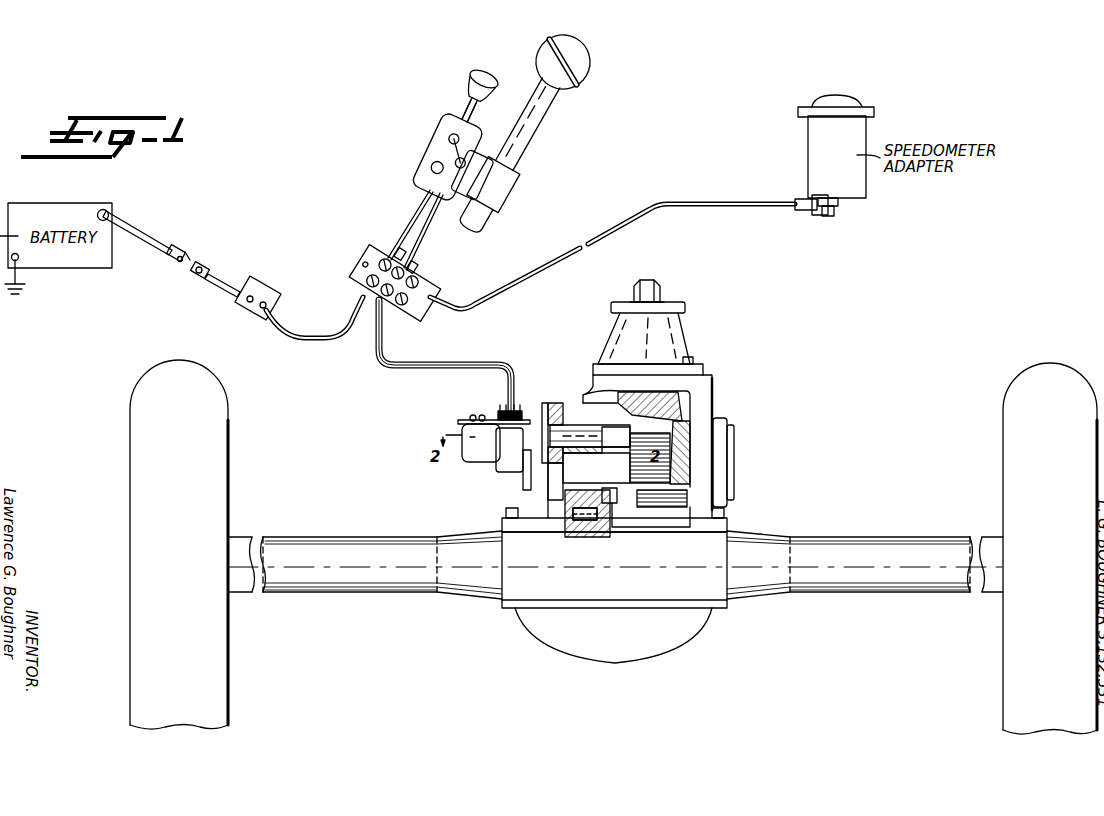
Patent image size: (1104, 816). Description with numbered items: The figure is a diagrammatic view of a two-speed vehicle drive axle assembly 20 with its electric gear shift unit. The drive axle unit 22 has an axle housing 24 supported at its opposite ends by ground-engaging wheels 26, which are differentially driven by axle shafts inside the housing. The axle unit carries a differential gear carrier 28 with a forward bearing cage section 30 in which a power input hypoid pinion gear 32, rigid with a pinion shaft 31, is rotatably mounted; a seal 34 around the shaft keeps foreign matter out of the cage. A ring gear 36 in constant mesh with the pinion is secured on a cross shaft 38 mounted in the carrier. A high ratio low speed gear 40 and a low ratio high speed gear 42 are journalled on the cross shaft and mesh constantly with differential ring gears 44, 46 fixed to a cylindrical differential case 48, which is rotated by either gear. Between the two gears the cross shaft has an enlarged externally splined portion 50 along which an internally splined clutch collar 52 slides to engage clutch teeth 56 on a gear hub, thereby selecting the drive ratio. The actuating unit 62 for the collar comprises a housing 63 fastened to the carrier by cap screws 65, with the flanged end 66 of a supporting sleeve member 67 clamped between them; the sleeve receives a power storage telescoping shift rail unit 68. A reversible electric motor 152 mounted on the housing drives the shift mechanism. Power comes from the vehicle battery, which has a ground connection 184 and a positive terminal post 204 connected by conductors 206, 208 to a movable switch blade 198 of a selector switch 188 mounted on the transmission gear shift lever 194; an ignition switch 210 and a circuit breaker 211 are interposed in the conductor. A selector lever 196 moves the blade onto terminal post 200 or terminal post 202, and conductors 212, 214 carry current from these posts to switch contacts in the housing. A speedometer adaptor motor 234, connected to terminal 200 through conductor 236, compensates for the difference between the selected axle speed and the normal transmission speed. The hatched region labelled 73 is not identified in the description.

The two-speed vehicle drive axle assembly 20 is at (706, 633).
The drive axle unit 22 is at (524, 633).
The axle housing 24 is at (900, 545).
The ground-engaging wheels 26 is at (1005, 400).
The differential gear carrier 28 is at (700, 378).
The bearing cage section 30 is at (686, 326).
The pinion shaft 31 is at (648, 280).
The power input hypoid pinion gear 32 is at (634, 388).
The seal 34 is at (680, 300).
The ring gear 36 is at (718, 418).
The cross shaft 38 is at (725, 458).
The high ratio low speed gear 40 is at (700, 500).
The low ratio high speed gear 42 is at (565, 488).
The differential ring gear 44 is at (662, 507).
The differential ring gear 46 is at (569, 513).
The differential case 48 is at (598, 538).
The externally splined portion 50 is at (618, 468).
The clutch collar 52 is at (612, 503).
The clutch teeth 56 is at (650, 458).
The actuating unit 62 is at (462, 417).
The housing 63 is at (456, 428).
The cap screws 65 is at (545, 403).
The flanged end 66 is at (550, 473).
The supporting sleeve member 67 is at (582, 459).
The power storage telescoping shift rail unit 68 is at (585, 408).
The worm gear 73 is at (654, 438).
The reversible electric motor 152 is at (500, 472).
The ground connection 184 is at (20, 272).
The selector switch 188 is at (482, 66).
The transmission gear shift lever 194 is at (528, 140).
The selector lever 196 is at (456, 110).
The movable switch blade 198 is at (448, 138).
The terminal post 200 is at (430, 167).
The terminal post 202 is at (452, 124).
The positive terminal post 204 is at (110, 206).
The conductor 206 is at (147, 235).
The conductor 208 is at (400, 246).
The ignition switch 210 is at (190, 263).
The circuit breaker 211 is at (262, 290).
The conductor 212 is at (432, 233).
The conductor 214 is at (428, 258).
The speedometer adaptor motor 234 is at (862, 130).
The conductor 236 is at (712, 205).